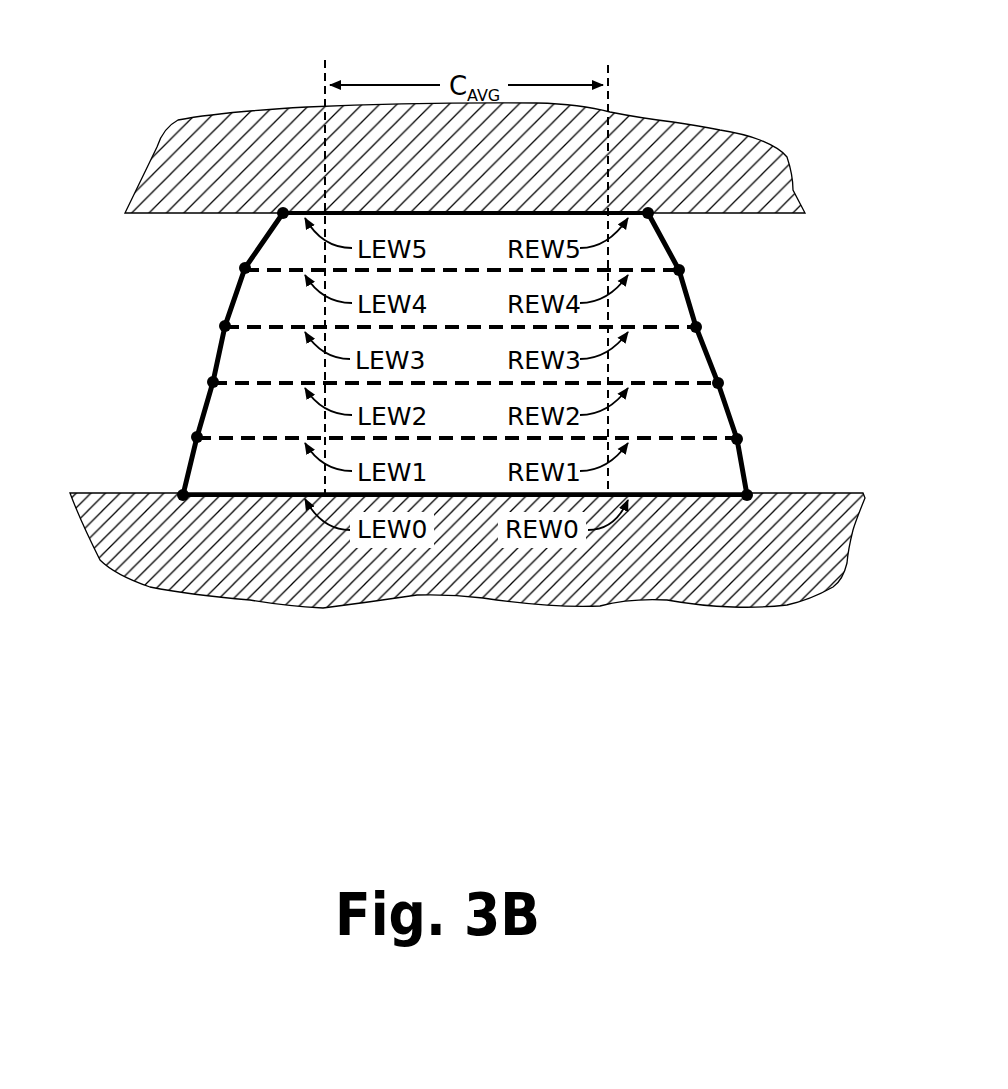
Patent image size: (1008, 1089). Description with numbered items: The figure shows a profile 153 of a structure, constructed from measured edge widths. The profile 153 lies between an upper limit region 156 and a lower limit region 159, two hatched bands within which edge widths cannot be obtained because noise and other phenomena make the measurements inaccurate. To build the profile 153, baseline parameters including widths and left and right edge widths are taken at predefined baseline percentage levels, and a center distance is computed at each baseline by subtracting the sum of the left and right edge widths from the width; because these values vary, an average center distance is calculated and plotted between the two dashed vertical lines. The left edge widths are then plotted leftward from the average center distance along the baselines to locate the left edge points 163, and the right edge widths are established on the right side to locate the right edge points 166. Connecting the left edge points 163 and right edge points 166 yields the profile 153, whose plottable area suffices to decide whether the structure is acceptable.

The profile 153 is at (277, 88).
The upper limit region 156 is at (672, 118).
The lower limit region 159 is at (828, 590).
The left edge points 163 is at (227, 267).
The right edge points 166 is at (702, 272).